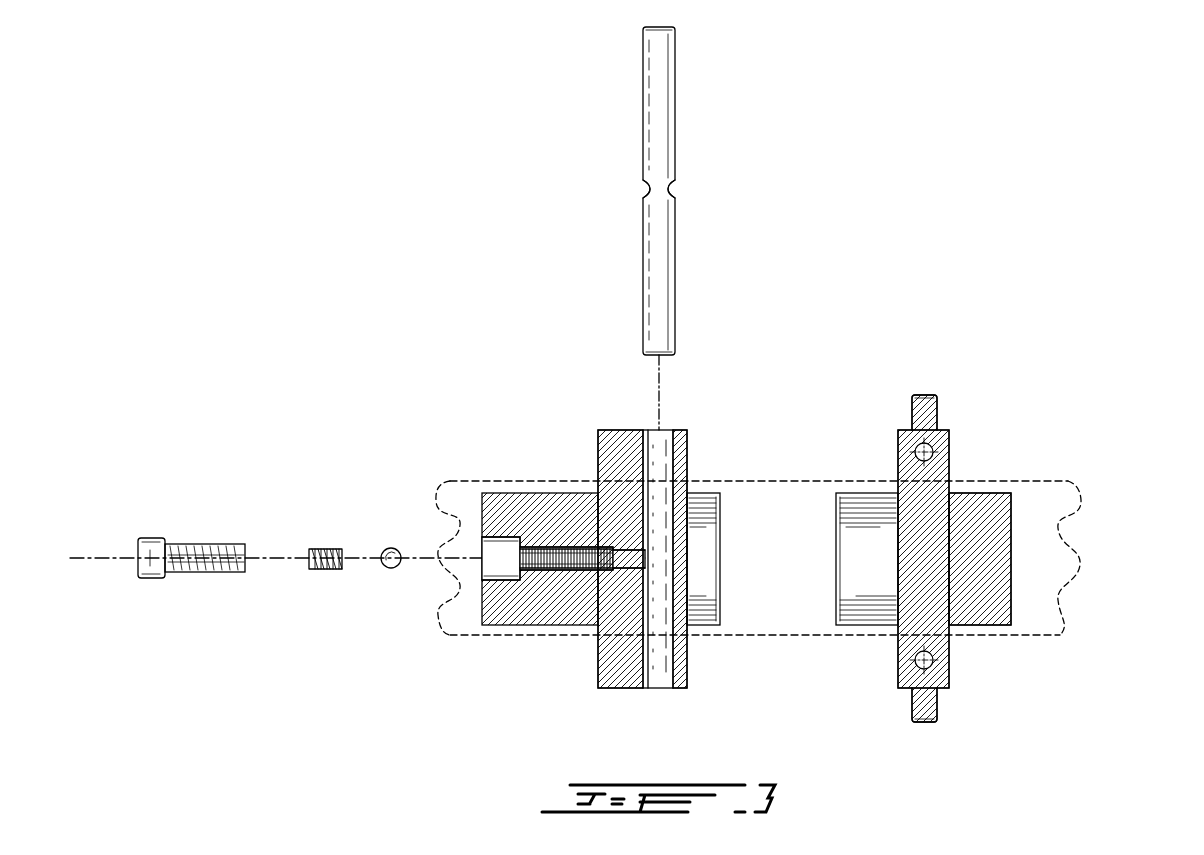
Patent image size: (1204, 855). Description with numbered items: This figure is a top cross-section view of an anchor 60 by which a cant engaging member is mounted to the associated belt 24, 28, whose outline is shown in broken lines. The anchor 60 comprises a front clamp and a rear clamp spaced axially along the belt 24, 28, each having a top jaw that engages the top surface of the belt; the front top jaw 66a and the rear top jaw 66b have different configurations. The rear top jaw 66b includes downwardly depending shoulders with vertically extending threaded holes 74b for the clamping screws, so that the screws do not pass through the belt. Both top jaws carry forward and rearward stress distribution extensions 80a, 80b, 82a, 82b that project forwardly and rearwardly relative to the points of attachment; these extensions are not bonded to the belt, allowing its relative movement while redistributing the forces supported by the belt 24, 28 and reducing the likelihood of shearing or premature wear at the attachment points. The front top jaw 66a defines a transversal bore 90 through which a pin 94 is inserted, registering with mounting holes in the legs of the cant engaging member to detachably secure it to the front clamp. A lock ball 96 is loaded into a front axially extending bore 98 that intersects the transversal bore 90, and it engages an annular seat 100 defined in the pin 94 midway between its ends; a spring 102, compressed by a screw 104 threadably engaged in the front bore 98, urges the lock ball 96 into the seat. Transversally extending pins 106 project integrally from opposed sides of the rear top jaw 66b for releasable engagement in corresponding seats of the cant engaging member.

The anchor 60 is at (628, 477).
The front top jaw 66a is at (544, 531).
The rear top jaw 66b is at (991, 513).
The threaded holes 74b is at (916, 450).
The forward stress distribution extension 80a is at (530, 610).
The forward stress distribution extension 80b is at (860, 610).
The rearward stress distribution extension 82a is at (706, 495).
The rearward stress distribution extension 82b is at (1010, 562).
The transversal bore 90 is at (658, 688).
The pin 94 is at (660, 96).
The lock ball 96 is at (393, 548).
The front axially extending bore 98 is at (566, 548).
The annular seat 100 is at (672, 190).
The spring 102 is at (316, 548).
The screw 104 is at (205, 538).
The transversally extending pins 106 is at (922, 394).
The belt 24 is at (811, 538).
The belt 28 is at (1040, 481).